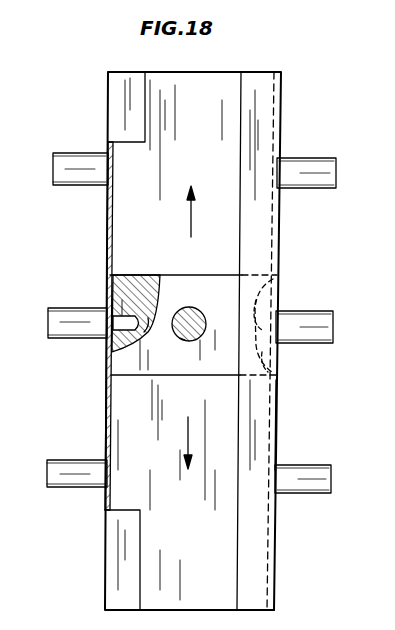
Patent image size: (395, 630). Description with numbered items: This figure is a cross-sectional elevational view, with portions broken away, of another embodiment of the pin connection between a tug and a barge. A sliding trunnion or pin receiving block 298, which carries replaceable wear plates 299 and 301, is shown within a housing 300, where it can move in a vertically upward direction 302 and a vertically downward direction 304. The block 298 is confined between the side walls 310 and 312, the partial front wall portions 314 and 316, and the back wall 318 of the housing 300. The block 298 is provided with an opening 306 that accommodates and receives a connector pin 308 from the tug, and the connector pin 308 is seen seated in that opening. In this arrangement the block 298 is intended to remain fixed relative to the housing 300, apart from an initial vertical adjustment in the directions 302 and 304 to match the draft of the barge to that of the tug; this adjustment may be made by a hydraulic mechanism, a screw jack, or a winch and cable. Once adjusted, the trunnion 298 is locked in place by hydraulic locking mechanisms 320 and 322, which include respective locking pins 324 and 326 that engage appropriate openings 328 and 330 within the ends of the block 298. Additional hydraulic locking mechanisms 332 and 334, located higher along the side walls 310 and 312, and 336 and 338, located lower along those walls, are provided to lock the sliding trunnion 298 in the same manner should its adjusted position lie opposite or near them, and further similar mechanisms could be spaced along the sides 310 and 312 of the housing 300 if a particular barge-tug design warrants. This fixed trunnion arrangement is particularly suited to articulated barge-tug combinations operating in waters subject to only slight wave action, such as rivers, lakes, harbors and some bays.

The sliding trunnion or pin receiving block 298 is at (208, 273).
The replaceable wear plate 299 is at (110, 278).
The housing 300 is at (282, 96).
The replaceable wear plate 301 is at (278, 376).
The vertically upward direction 302 is at (190, 215).
The vertically downward direction 304 is at (187, 432).
The opening 306 is at (178, 336).
The connector pin 308 is at (200, 337).
The side wall 310 is at (107, 407).
The side wall 312 is at (278, 417).
The partial front wall portion 314 is at (138, 542).
The partial front wall portion 316 is at (245, 558).
The back wall 318 is at (192, 96).
The hydraulic locking mechanism 320 is at (70, 308).
The hydraulic locking mechanism 322 is at (308, 312).
The locking pin 324 is at (128, 318).
The locking pin 326 is at (277, 283).
The opening 328 is at (146, 318).
The opening 330 is at (262, 326).
The additional hydraulic locking mechanism 332 is at (68, 153).
The additional hydraulic locking mechanism 334 is at (310, 147).
The additional hydraulic locking mechanism 336 is at (68, 487).
The additional hydraulic locking mechanism 338 is at (305, 494).